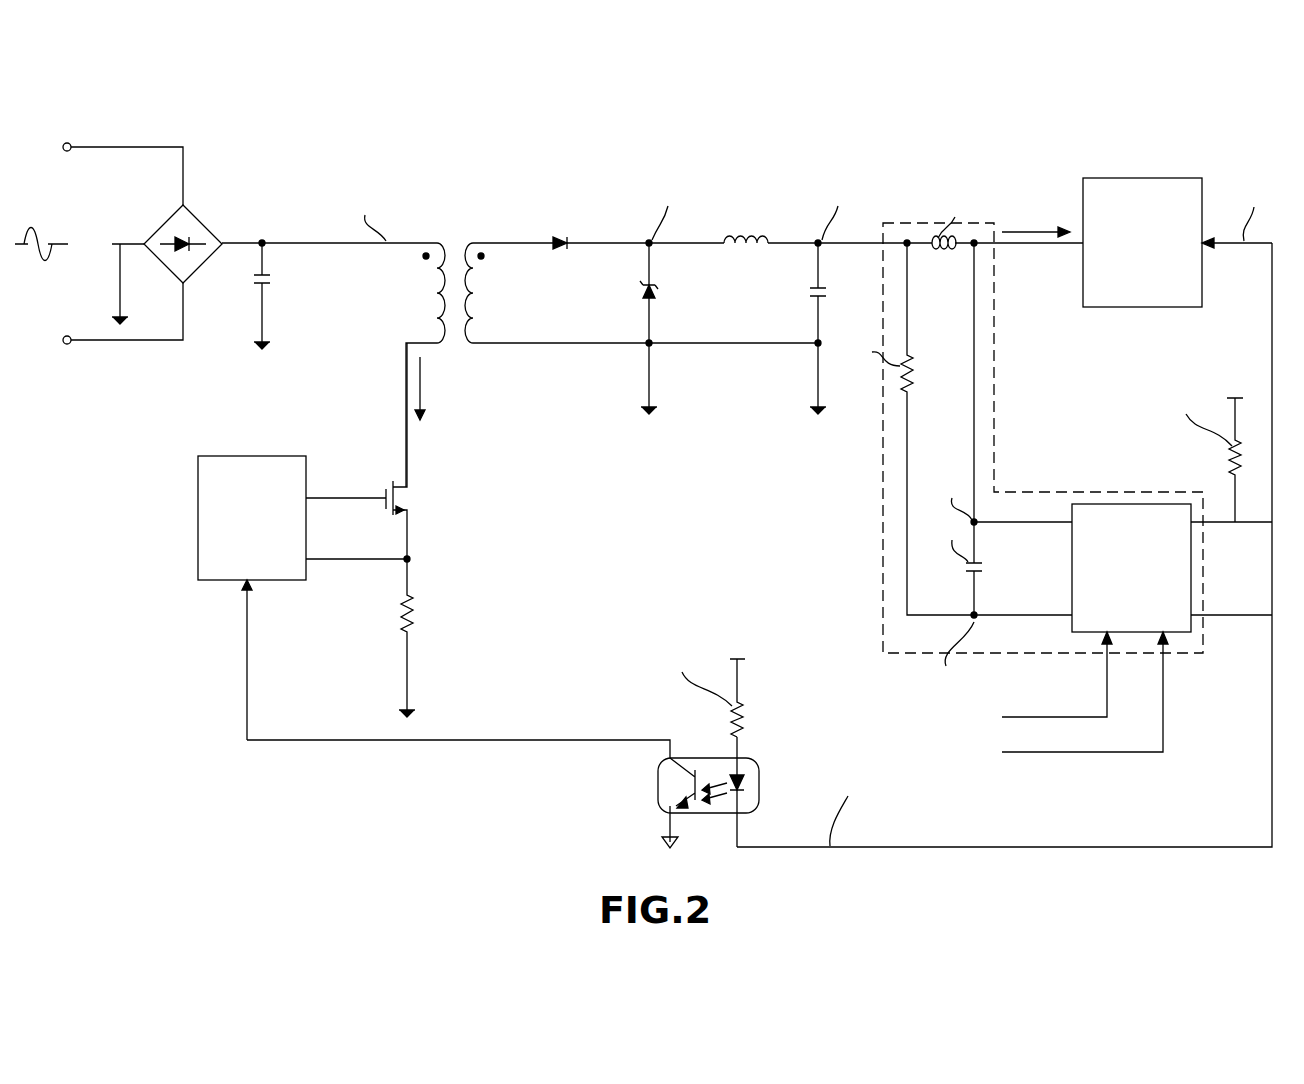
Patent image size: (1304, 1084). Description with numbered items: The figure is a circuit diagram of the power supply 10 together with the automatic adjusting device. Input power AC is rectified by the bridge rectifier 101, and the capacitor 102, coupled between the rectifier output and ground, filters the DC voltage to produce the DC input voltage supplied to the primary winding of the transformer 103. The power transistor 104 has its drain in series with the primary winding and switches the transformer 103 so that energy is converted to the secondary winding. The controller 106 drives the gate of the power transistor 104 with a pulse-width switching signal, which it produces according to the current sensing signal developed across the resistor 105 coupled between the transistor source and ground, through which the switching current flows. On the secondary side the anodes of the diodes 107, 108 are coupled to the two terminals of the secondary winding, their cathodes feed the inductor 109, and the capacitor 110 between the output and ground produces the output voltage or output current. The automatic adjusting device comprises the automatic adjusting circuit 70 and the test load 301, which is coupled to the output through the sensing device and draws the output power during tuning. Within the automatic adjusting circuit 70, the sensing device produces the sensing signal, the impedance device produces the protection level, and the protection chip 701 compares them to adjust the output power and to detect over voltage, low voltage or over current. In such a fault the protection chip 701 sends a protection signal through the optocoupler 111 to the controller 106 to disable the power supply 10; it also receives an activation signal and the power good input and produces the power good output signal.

The power supply 10 is at (1043, 90).
The bridge rectifier 101 is at (206, 222).
The capacitor 102 is at (278, 278).
The transformer 103 is at (471, 240).
The power transistor 104 is at (410, 488).
The resistor 105 is at (416, 610).
The controller 106 is at (198, 506).
The diode 107 is at (563, 238).
The diode 108 is at (658, 294).
The inductor 109 is at (740, 238).
The capacitor 110 is at (826, 294).
The optocoupler 111 is at (748, 758).
The test load 301 is at (1146, 178).
The automatic adjusting circuit 70 is at (1076, 492).
The protection chip 701 is at (1134, 504).